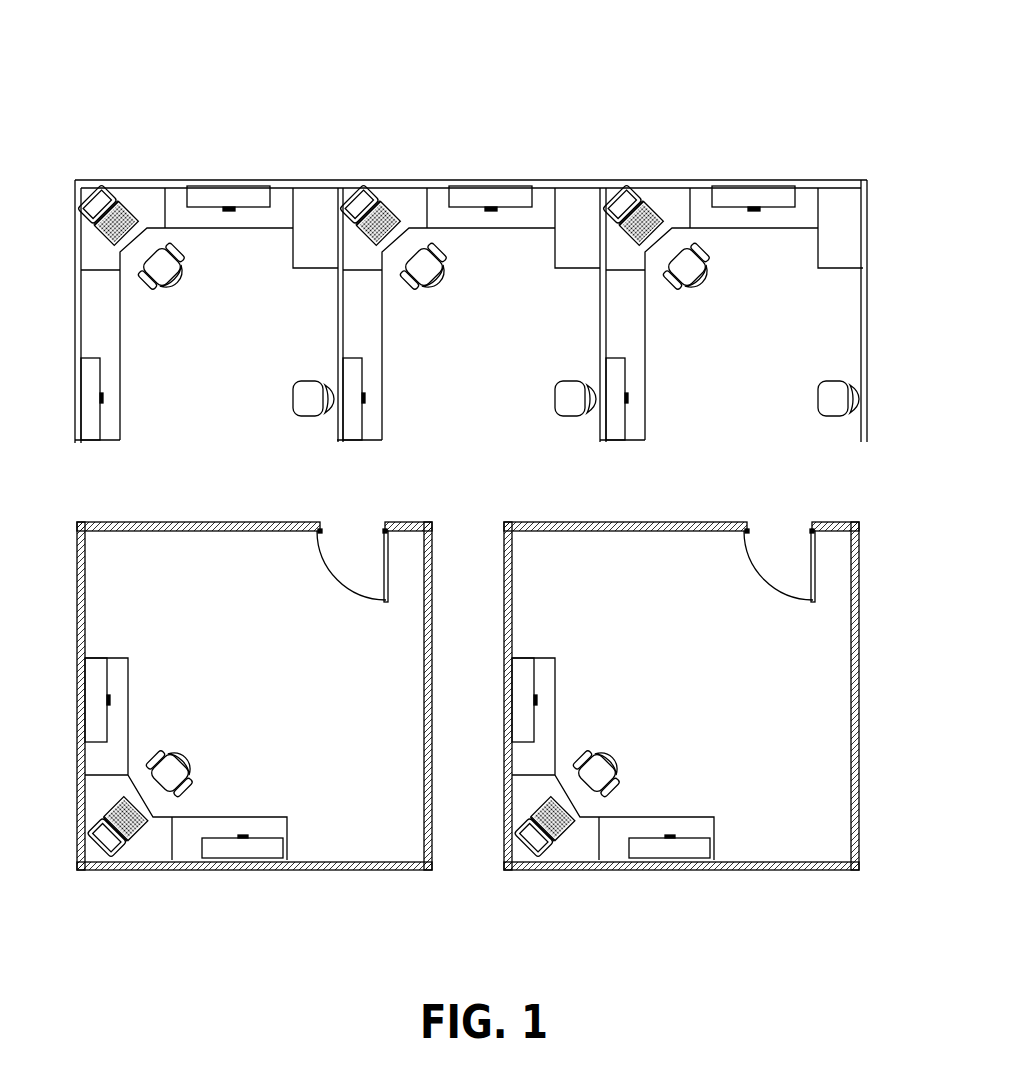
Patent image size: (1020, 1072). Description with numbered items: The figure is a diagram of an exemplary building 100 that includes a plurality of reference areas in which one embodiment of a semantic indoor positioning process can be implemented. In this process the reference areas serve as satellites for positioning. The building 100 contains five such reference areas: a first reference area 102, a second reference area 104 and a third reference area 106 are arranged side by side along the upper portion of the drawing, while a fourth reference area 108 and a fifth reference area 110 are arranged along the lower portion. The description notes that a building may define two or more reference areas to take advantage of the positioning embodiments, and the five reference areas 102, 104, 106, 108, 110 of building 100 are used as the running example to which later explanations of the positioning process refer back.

The building 100 is at (446, 150).
The reference area 102 is at (204, 390).
The reference area 104 is at (471, 390).
The reference area 106 is at (737, 390).
The reference area 108 is at (265, 726).
The reference area 110 is at (675, 726).